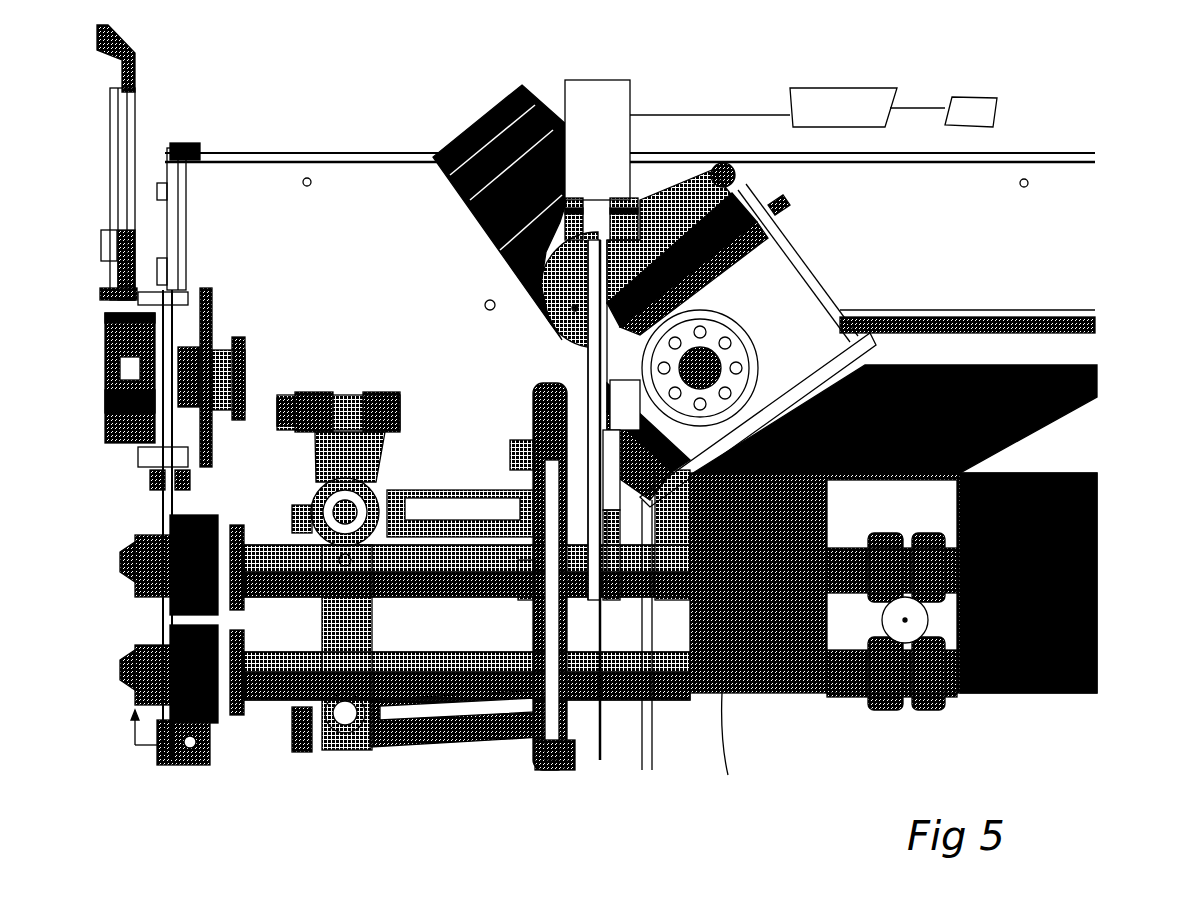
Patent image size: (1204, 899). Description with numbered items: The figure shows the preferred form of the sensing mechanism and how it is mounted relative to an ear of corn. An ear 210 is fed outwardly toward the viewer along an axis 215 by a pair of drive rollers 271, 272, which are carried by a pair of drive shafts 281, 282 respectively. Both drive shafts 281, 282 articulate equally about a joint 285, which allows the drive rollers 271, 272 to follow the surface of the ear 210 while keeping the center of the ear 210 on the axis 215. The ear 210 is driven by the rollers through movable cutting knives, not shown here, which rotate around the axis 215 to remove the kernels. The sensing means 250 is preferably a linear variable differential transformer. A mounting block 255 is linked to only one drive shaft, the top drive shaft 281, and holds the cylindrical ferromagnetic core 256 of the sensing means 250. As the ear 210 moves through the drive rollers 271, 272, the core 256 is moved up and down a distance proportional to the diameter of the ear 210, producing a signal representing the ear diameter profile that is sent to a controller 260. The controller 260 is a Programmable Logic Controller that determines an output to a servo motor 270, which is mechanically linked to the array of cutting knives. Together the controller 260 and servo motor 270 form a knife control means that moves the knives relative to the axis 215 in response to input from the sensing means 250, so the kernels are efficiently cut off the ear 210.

The ear 210 is at (928, 628).
The axis 215 is at (1028, 591).
The sensing means 250 is at (636, 96).
The mounting block 255 is at (585, 436).
The cylindrical ferromagnetic core 256 is at (596, 354).
The controller 260 is at (845, 87).
The servo motor 270 is at (975, 96).
The drive roller 271 is at (1001, 538).
The drive roller 272 is at (916, 701).
The drive shaft 281 is at (430, 583).
The drive shaft 282 is at (465, 690).
The joint 285 is at (307, 613).